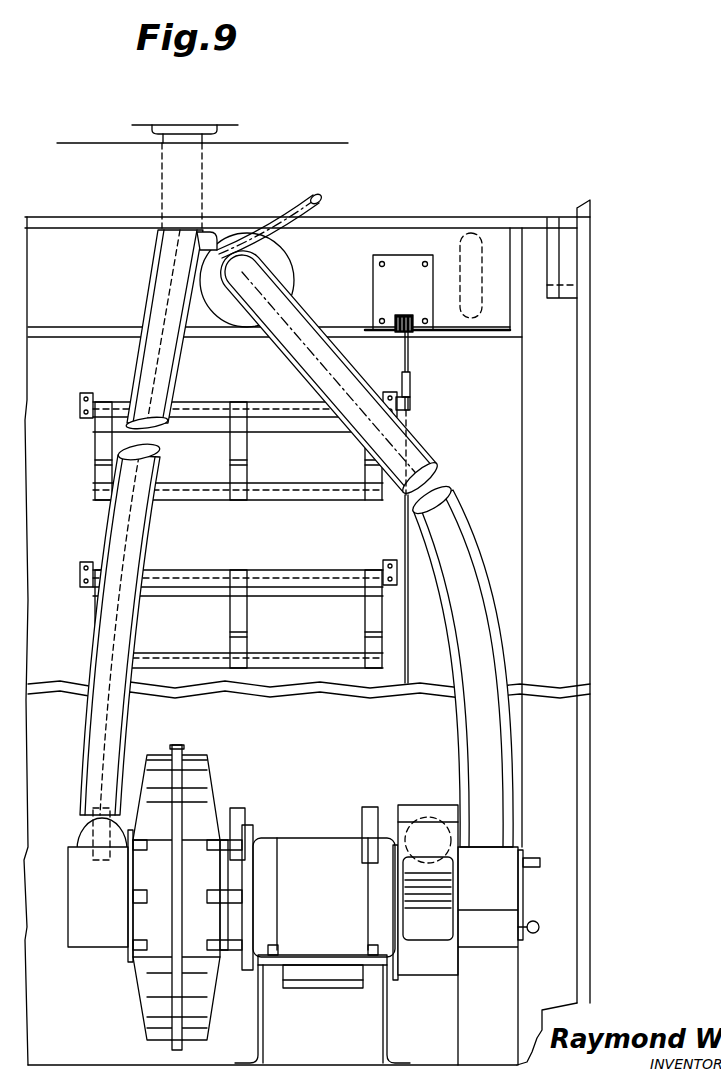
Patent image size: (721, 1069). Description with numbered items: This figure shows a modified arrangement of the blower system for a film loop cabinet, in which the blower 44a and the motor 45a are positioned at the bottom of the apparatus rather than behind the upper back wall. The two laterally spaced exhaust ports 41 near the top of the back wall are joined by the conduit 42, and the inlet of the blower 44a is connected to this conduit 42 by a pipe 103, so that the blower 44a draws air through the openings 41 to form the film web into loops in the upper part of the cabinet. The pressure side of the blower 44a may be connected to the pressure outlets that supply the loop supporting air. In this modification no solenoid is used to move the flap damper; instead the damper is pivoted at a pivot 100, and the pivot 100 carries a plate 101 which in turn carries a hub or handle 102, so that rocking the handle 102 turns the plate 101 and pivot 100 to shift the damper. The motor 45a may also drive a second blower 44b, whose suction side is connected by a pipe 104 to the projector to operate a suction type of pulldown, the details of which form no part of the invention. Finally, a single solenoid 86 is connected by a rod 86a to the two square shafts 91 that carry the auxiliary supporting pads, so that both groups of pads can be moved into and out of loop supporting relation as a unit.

The air outlets or exhaust ports 41 is at (459, 228).
The conduit 42 is at (455, 323).
The solenoid 86 is at (386, 296).
The rod 86a is at (407, 542).
The square shaft 91 is at (200, 404).
The pipe 103 is at (472, 612).
The pipe 104 is at (153, 352).
The blower 44a is at (422, 805).
The second blower 44b is at (200, 765).
The motor 45a is at (322, 935).
The pivot 100 is at (537, 865).
The plate 101 is at (523, 895).
The hub or handle 102 is at (540, 925).